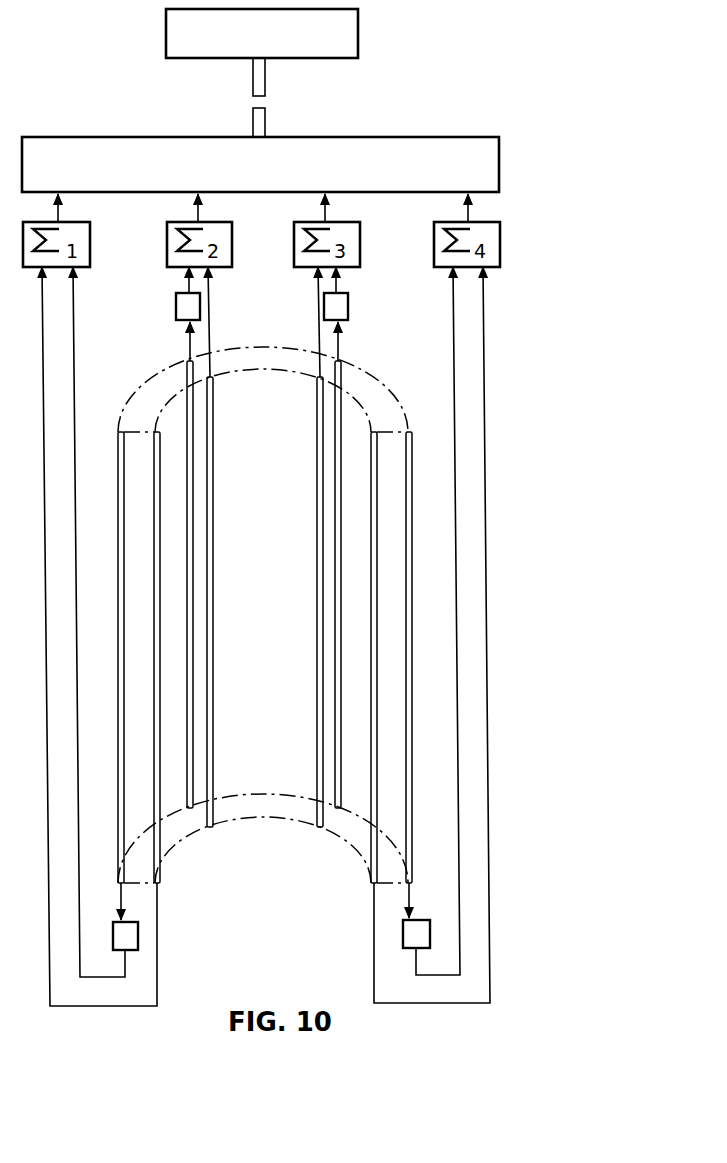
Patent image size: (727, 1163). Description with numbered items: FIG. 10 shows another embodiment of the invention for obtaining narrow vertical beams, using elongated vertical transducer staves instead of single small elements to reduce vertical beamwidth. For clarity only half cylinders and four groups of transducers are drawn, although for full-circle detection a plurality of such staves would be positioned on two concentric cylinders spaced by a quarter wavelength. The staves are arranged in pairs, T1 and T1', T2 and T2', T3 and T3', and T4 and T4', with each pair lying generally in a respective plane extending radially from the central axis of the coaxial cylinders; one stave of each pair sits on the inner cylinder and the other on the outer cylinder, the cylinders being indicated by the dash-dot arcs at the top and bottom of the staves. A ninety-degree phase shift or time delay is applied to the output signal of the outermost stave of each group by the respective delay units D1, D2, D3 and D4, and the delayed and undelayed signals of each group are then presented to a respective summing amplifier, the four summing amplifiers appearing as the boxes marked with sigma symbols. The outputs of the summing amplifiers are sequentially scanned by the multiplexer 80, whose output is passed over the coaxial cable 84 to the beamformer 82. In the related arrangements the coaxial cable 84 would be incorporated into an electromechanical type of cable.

The multiplexer 80 is at (455, 137).
The beamformer 82 is at (358, 23).
The coaxial cable 84 is at (265, 78).
The transducer stave T1 is at (107, 657).
The transducer stave T1' is at (171, 657).
The transducer stave T2 is at (179, 537).
The transducer stave T2' is at (228, 547).
The transducer stave T3 is at (351, 537).
The transducer stave T3' is at (305, 547).
The transducer stave T4 is at (426, 657).
The transducer stave T4' is at (388, 657).
The 90° phase shifter or time delay D1 is at (113, 937).
The 90° phase shifter or time delay D2 is at (176, 305).
The 90° phase shifter or time delay D3 is at (348, 307).
The 90° phase shifter or time delay D4 is at (430, 935).